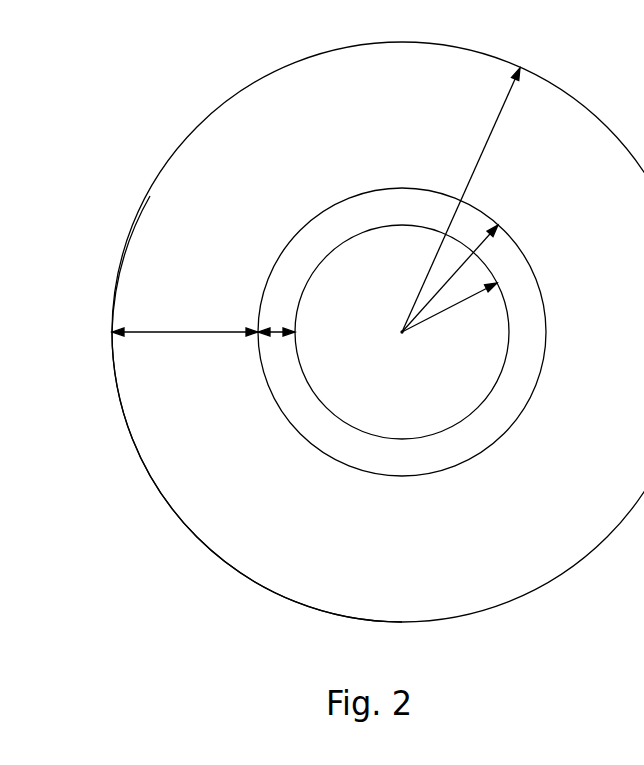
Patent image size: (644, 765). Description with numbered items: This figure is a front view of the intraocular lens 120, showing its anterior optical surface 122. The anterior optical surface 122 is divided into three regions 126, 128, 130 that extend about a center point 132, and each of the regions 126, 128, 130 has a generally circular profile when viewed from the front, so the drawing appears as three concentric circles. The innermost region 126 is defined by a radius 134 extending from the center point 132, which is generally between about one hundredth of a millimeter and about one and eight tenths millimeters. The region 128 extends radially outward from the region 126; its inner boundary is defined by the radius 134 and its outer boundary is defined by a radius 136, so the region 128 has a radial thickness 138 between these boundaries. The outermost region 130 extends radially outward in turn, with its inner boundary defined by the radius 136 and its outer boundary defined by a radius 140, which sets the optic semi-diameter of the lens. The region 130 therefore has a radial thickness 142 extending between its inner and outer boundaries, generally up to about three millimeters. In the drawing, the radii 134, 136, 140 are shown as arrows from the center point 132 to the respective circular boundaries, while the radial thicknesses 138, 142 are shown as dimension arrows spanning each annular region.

The intraocular lens 120 is at (176, 80).
The anterior optical surface 122 is at (153, 200).
The region 126 is at (417, 390).
The region 128 is at (417, 466).
The region 130 is at (417, 560).
The center point 132 is at (400, 332).
The radius 134 is at (455, 308).
The radius 136 is at (475, 248).
The radial thickness 138 is at (273, 335).
The radius 140 is at (485, 138).
The radial thickness 142 is at (172, 332).